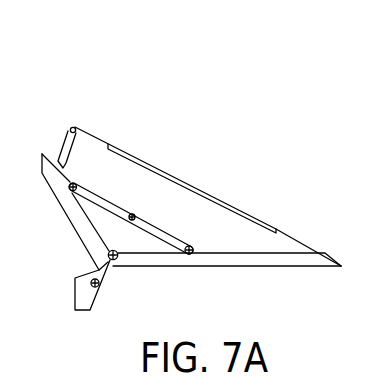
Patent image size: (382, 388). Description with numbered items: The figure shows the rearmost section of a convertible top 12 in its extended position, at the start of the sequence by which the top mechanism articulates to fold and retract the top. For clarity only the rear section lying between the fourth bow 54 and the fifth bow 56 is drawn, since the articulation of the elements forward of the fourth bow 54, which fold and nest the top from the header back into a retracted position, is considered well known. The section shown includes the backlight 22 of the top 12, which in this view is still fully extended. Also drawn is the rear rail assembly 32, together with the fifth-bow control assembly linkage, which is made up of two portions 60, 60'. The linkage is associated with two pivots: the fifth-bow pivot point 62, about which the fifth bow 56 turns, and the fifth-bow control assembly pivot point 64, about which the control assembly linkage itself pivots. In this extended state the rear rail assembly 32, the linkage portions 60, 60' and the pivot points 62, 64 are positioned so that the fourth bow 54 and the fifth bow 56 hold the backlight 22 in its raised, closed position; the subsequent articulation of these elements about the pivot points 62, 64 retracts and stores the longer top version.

The top 12 is at (186, 81).
The backlight 22 is at (177, 178).
The rear rail assembly 32 is at (77, 218).
The bow #4 54 is at (70, 128).
The bow #5 56 is at (282, 259).
The #5 bow control assembly linkage portion 60 is at (131, 184).
The #5 bow control assembly linkage portion 60' is at (180, 216).
The #5 bow pivot point 62 is at (114, 260).
The #5 bow control assembly pivot point 64 is at (190, 254).